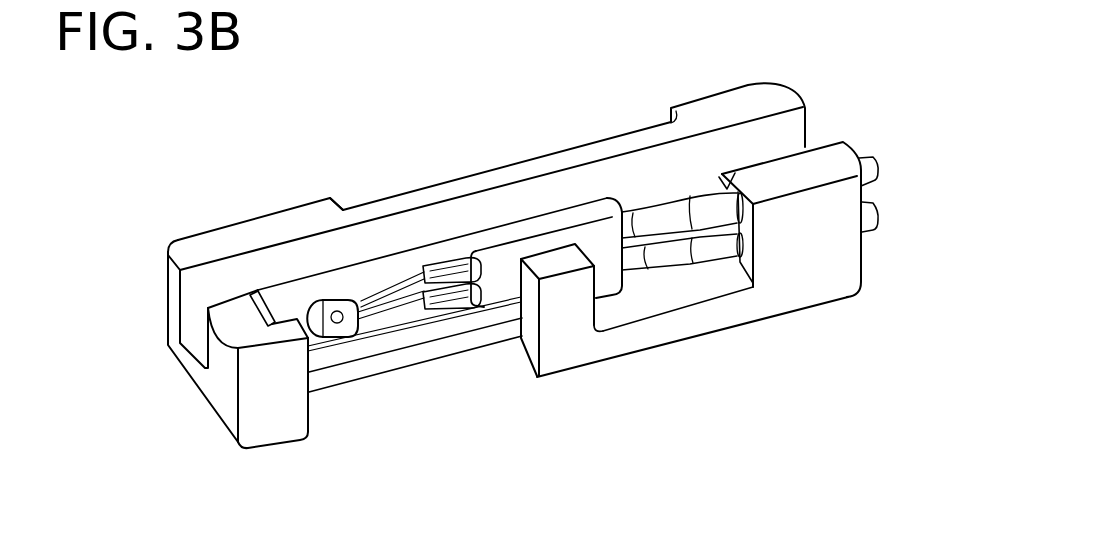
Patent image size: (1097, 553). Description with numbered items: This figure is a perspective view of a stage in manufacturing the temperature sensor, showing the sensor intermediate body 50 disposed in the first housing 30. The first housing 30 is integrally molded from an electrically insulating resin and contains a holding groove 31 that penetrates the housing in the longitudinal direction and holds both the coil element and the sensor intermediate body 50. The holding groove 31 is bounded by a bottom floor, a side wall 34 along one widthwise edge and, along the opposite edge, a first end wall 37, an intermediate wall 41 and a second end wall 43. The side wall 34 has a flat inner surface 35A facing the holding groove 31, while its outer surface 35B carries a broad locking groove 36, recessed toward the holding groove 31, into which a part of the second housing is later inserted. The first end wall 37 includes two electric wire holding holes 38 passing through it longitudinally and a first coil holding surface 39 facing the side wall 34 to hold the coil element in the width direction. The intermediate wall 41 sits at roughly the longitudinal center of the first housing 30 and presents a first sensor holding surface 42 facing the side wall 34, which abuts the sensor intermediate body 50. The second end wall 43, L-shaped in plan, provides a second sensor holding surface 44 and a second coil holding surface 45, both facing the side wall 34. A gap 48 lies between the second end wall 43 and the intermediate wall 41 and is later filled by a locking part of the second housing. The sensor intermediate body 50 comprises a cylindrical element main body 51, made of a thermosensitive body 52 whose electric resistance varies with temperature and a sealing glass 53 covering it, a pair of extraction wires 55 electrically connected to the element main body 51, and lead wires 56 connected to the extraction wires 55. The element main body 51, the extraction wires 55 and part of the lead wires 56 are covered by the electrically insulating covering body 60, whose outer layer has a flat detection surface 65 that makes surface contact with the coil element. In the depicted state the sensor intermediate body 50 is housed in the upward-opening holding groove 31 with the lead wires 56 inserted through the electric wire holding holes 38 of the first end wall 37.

The first housing 30 is at (268, 213).
The holding groove 31 is at (470, 217).
The side wall 34 is at (326, 205).
The inner surface 35A is at (213, 273).
The outer surface 35B is at (236, 222).
The locking groove 36 is at (583, 143).
The first end wall 37 is at (864, 258).
The electric wire holding hole 38 is at (737, 236).
The first coil holding surface 39 is at (725, 182).
The intermediate wall 41 is at (600, 308).
The first sensor holding surface 42 is at (535, 378).
The second end wall 43 is at (290, 448).
The second sensor holding surface 44 is at (262, 320).
The second coil holding surface 45 is at (186, 350).
The gap 48 is at (477, 363).
The sensor intermediate body 50 is at (530, 214).
The element main body 51 is at (345, 295).
The thermosensitive body 52 is at (337, 345).
The sealing glass 53 is at (357, 345).
The extraction wire 55 is at (428, 350).
The lead wire 56 is at (864, 157).
The covering body 60 is at (368, 300).
The detection surface 65 is at (425, 256).